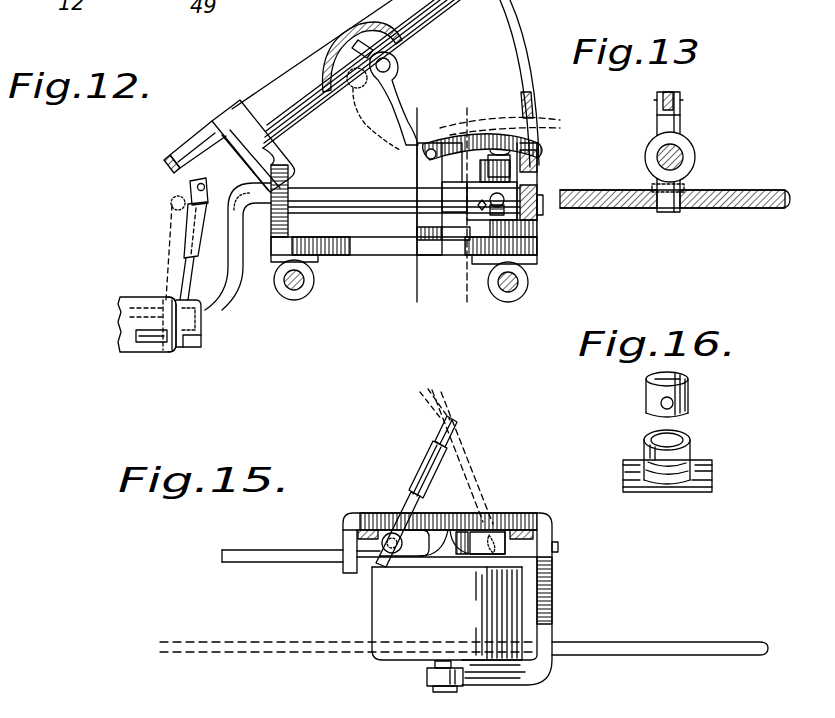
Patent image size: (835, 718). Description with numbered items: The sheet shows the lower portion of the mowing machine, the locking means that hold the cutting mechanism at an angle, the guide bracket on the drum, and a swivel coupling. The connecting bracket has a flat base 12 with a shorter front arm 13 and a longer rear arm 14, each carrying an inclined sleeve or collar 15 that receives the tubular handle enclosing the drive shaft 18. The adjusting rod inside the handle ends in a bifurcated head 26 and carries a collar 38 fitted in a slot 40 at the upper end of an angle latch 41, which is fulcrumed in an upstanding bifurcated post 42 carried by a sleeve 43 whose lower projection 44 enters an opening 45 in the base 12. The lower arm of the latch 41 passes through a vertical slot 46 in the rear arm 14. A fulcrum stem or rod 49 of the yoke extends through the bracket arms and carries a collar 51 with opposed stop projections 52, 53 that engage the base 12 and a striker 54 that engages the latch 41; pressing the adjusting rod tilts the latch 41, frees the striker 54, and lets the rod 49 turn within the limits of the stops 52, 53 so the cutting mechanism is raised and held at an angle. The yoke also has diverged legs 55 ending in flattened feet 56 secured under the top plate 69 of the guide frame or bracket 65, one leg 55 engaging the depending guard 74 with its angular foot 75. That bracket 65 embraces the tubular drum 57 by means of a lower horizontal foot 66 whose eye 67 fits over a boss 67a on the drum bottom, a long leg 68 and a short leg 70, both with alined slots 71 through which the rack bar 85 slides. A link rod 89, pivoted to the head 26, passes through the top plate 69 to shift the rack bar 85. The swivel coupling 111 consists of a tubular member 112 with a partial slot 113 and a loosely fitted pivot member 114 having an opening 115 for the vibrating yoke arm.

In FIG. 12, the flat base 12 is at (352, 252).
In FIG. 13, the flat base 12 is at (722, 206).
In FIG. 12, the front arm 13 is at (412, 208).
In FIG. 12, the rear arm 14 is at (461, 301).
In FIG. 12, the sleeves or collars 15 is at (234, 104).
In FIG. 12, the drive shaft 18 is at (185, 175).
In FIG. 12, the bifurcated head 26 is at (186, 186).
In FIG. 12, the collar 38 is at (346, 74).
In FIG. 12, the slot 40 is at (398, 62).
In FIG. 12, the angle latch 41 is at (398, 86).
In FIG. 13, the angle latch 41 is at (680, 94).
In FIG. 12, the bifurcated post 42 is at (466, 142).
In FIG. 13, the bifurcated post 42 is at (680, 122).
In FIG. 12, the sleeve 43 is at (433, 194).
In FIG. 13, the sleeve 43 is at (696, 164).
In FIG. 12, the lower projection 44 is at (427, 232).
In FIG. 13, the lower projection 44 is at (682, 189).
In FIG. 13, the opening 45 is at (652, 212).
In FIG. 12, the vertical slot 46 is at (516, 150).
In FIG. 12, the fulcrum stem or rod 49 is at (312, 198).
In FIG. 12, the collar 51 is at (540, 216).
In FIG. 12, the stop projection 52 is at (503, 200).
In FIG. 12, the stop projection 53 is at (537, 238).
In FIG. 12, the striker 54 is at (522, 170).
In FIG. 12, the diverged legs 55 is at (236, 292).
In FIG. 15, the flattened foot or connecting terminal 56 is at (352, 525).
In FIG. 15, the tubular drum 57 is at (512, 612).
In FIG. 15, the guide frame or bracket 65 is at (566, 553).
In FIG. 15, the lower horizontal foot 66 is at (504, 682).
In FIG. 15, the eye 67 is at (427, 676).
In FIG. 15, the boss 67a is at (440, 692).
In FIG. 15, the leg 68 is at (560, 582).
In FIG. 15, the top plate 69 is at (506, 514).
In FIG. 12, the leg 70 is at (128, 326).
In FIG. 15, the leg 70 is at (345, 544).
In FIG. 12, the alined slots 71 is at (166, 344).
In FIG. 12, the depending guard 74 is at (202, 334).
In FIG. 15, the depending guard 74 is at (412, 562).
In FIG. 12, the angular foot 75 is at (200, 344).
In FIG. 12, the rack bar 85 is at (152, 338).
In FIG. 12, the link rod 89 is at (184, 266).
In FIG. 15, the link rod 89 is at (422, 480).
In FIG. 16, the swivel coupling 111 is at (655, 408).
In FIG. 16, the tubular member 112 is at (690, 458).
In FIG. 16, the slot 113 is at (625, 470).
In FIG. 16, the pivot member 114 is at (690, 392).
In FIG. 16, the opening 115 is at (676, 405).